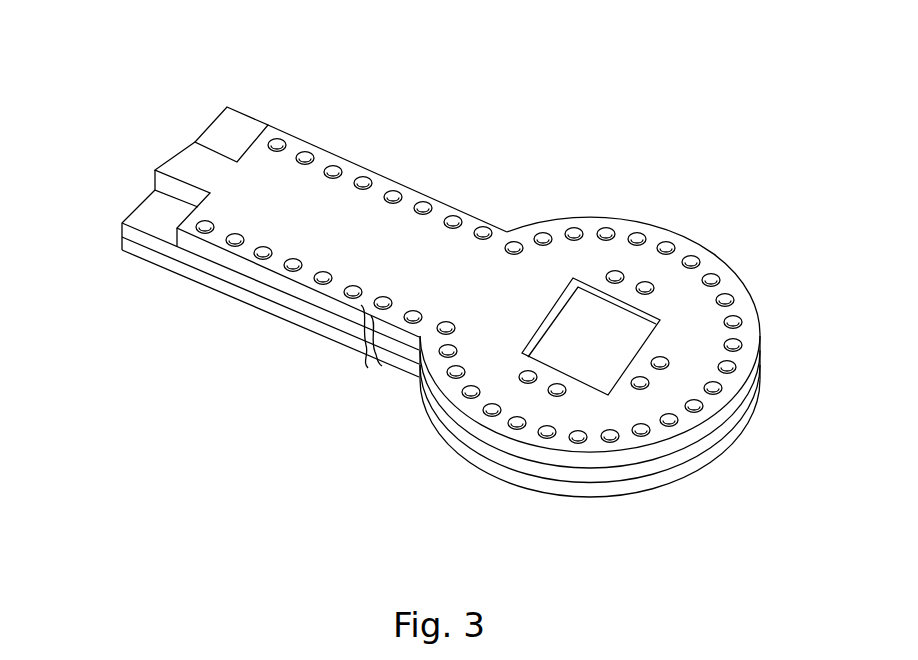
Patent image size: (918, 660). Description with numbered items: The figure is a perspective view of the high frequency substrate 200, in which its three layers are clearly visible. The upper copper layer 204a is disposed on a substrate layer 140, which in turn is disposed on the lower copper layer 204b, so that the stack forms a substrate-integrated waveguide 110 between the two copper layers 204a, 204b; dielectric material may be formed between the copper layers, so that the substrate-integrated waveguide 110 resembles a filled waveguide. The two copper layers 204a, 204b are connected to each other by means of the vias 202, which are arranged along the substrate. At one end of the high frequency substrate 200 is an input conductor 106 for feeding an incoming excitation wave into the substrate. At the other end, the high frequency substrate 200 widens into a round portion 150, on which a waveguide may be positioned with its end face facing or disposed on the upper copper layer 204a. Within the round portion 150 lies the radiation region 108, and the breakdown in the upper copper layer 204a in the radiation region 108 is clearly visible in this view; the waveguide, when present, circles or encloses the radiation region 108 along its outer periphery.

The high frequency substrate 200 is at (677, 197).
The input conductor 106 is at (193, 167).
The radiation region 108 is at (593, 305).
The substrate-integrated waveguide 110 is at (398, 357).
The substrate layer 140 is at (224, 274).
The round portion 150 is at (783, 525).
The vias 202 is at (680, 423).
The upper copper layer 204a is at (265, 280).
The lower copper layer 204b is at (165, 265).